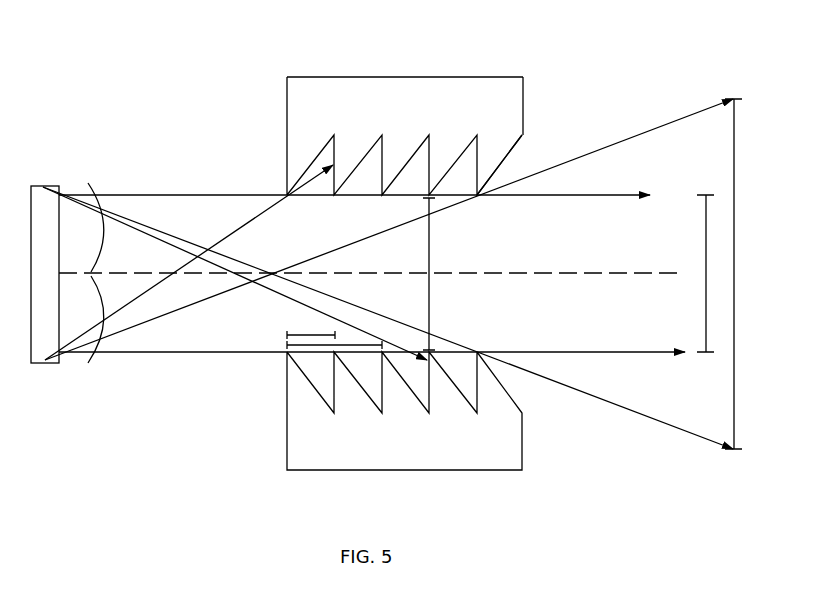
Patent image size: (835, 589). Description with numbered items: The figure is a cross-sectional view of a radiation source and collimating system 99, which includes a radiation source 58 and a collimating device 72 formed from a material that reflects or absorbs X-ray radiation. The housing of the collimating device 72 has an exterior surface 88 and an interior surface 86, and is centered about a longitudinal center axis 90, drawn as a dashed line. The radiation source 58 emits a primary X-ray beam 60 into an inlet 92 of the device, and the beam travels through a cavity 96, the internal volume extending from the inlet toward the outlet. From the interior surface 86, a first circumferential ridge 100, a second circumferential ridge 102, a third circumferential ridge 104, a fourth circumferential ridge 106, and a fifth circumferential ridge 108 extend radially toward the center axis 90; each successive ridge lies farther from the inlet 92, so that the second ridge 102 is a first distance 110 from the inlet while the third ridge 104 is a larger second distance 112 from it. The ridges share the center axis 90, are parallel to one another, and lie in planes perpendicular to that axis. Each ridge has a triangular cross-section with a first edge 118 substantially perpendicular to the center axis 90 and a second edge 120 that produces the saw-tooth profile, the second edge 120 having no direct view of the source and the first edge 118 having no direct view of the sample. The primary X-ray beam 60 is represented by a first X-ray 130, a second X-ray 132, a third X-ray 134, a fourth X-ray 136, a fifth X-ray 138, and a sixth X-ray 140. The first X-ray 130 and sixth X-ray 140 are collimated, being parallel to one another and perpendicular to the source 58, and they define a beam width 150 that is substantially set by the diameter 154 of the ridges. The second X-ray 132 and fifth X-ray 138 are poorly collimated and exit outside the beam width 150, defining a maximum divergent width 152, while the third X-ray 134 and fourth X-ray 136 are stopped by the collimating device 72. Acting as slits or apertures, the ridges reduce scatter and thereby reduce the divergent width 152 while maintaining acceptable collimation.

The radiation source 58 is at (37, 186).
The primary X-ray beam 60 is at (113, 268).
The collimating device 72 is at (523, 95).
The interior surface 86 is at (523, 131).
The exterior surface 88 is at (452, 77).
The longitudinal center axis 90 is at (570, 275).
The inlet 92 is at (270, 242).
The cavity 96 is at (549, 250).
The radiation source and collimating system 99 is at (642, 84).
The first circumferential ridge 100 is at (287, 150).
The second circumferential ridge 102 is at (333, 188).
The third circumferential ridge 104 is at (381, 180).
The fourth circumferential ridge 106 is at (425, 190).
The fifth circumferential ridge 108 is at (477, 190).
The first distance 110 is at (295, 333).
The second distance 112 is at (368, 345).
The first edge 118 is at (287, 383).
The second edge 120 is at (310, 383).
The first X-ray 130 is at (177, 195).
The second X-ray 132 is at (190, 240).
The third X-ray 134 is at (142, 232).
The fourth X-ray 136 is at (159, 289).
The fifth X-ray 138 is at (217, 297).
The sixth X-ray 140 is at (169, 352).
The beam width 150 is at (706, 232).
The maximum divergent width 152 is at (734, 249).
The diameter 154 is at (432, 288).